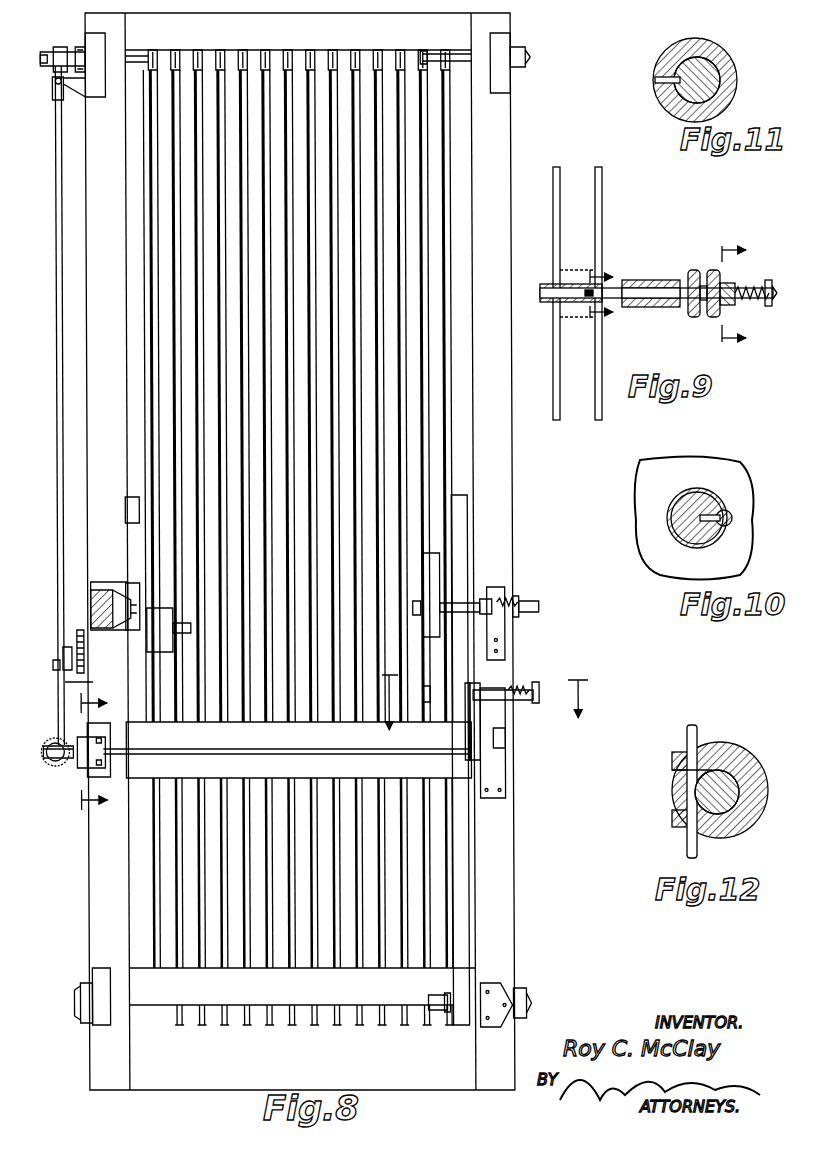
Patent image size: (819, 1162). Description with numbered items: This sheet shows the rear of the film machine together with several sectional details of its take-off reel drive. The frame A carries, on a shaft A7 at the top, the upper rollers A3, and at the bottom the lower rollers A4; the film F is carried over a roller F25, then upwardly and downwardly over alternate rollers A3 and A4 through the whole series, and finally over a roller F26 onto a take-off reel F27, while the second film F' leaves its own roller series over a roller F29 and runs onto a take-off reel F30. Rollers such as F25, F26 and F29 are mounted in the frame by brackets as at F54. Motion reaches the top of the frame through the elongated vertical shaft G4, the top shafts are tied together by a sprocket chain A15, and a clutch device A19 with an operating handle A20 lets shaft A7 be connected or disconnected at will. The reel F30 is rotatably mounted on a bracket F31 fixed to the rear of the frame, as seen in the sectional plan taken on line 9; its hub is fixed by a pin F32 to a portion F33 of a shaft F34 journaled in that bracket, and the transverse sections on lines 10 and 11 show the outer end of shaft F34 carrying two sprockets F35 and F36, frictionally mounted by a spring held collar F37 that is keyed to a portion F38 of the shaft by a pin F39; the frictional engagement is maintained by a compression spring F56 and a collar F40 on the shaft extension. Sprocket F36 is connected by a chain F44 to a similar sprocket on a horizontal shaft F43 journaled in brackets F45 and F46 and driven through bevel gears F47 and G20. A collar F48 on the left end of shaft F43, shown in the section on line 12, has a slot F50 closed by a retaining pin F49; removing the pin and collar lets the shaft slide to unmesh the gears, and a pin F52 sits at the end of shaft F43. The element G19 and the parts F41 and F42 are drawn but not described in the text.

In FIG. 8, the frame A is at (138, 972).
In FIG. 8, the upper rollers A3 is at (373, 53).
In FIG. 8, the lower rollers A4 is at (285, 1027).
In FIG. 8, the shaft A7 is at (456, 60).
In FIG. 8, the sprocket chain A15 is at (84, 55).
In FIG. 8, the clutch device A19 is at (62, 52).
In FIG. 8, the operating handle A20 is at (56, 118).
In FIG. 8, the vertical shaft G4 is at (56, 512).
In FIG. 8, the rack G19 is at (76, 645).
In FIG. 8, the bevel gear G20 is at (52, 764).
In FIG. 8, the film F is at (343, 565).
In FIG. 8, the film F' is at (489, 760).
In FIG. 8, the roller F25 is at (95, 612).
In FIG. 8, the roller F26 is at (112, 586).
In FIG. 8, the take-off reel F27 is at (433, 590).
In FIG. 8, the roller F29 is at (445, 1012).
In FIG. 8, the take-off reel F30 is at (457, 705).
In FIG. 9, the take-off reel F30 is at (560, 372).
In FIG. 10, the take-off reel F30 is at (672, 470).
In FIG. 8, the bracket F31 is at (492, 606).
In FIG. 9, the bracket F31 is at (648, 308).
In FIG. 9, the pin F32 is at (587, 298).
In FIG. 10, the pin F32 is at (722, 512).
In FIG. 9, the shaft portion F33 is at (572, 292).
In FIG. 10, the shaft portion F33 is at (700, 492).
In FIG. 9, the shaft F34 is at (650, 292).
In FIG. 9, the sprocket F35 is at (712, 318).
In FIG. 9, the sprocket F36 is at (700, 318).
In FIG. 9, the spring held collar F37 is at (713, 295).
In FIG. 11, the spring held collar F37 is at (730, 80).
In FIG. 9, the shaft portion F38 is at (692, 305).
In FIG. 11, the shaft portion F38 is at (712, 62).
In FIG. 11, the pin F39 is at (656, 80).
In FIG. 8, the collar F40 is at (534, 603).
In FIG. 9, the collar F40 is at (768, 283).
In FIG. 8, the bracket F41 is at (504, 640).
In FIG. 8, the shaft F42 is at (468, 600).
In FIG. 8, the horizontal shaft F43 is at (300, 748).
In FIG. 12, the horizontal shaft F43 is at (718, 796).
In FIG. 8, the chain F44 is at (503, 745).
In FIG. 8, the bracket F45 is at (490, 774).
In FIG. 8, the bracket F46 is at (98, 755).
In FIG. 8, the bevel gear F47 is at (64, 770).
In FIG. 8, the collar F48 is at (80, 772).
In FIG. 12, the collar F48 is at (735, 758).
In FIG. 12, the retaining pin F49 is at (697, 728).
In FIG. 12, the slot F50 is at (672, 770).
In FIG. 8, the pin F52 is at (48, 738).
In FIG. 8, the bracket F54 is at (492, 1000).
In FIG. 8, the compression spring F56 is at (513, 612).
In FIG. 9, the compression spring F56 is at (745, 302).
In FIG. 8, the section line 9 is at (486, 715).
In FIG. 9, the section line 10 is at (614, 299).
In FIG. 9, the section line 11 is at (749, 298).
In FIG. 8, the section line 12 is at (101, 752).